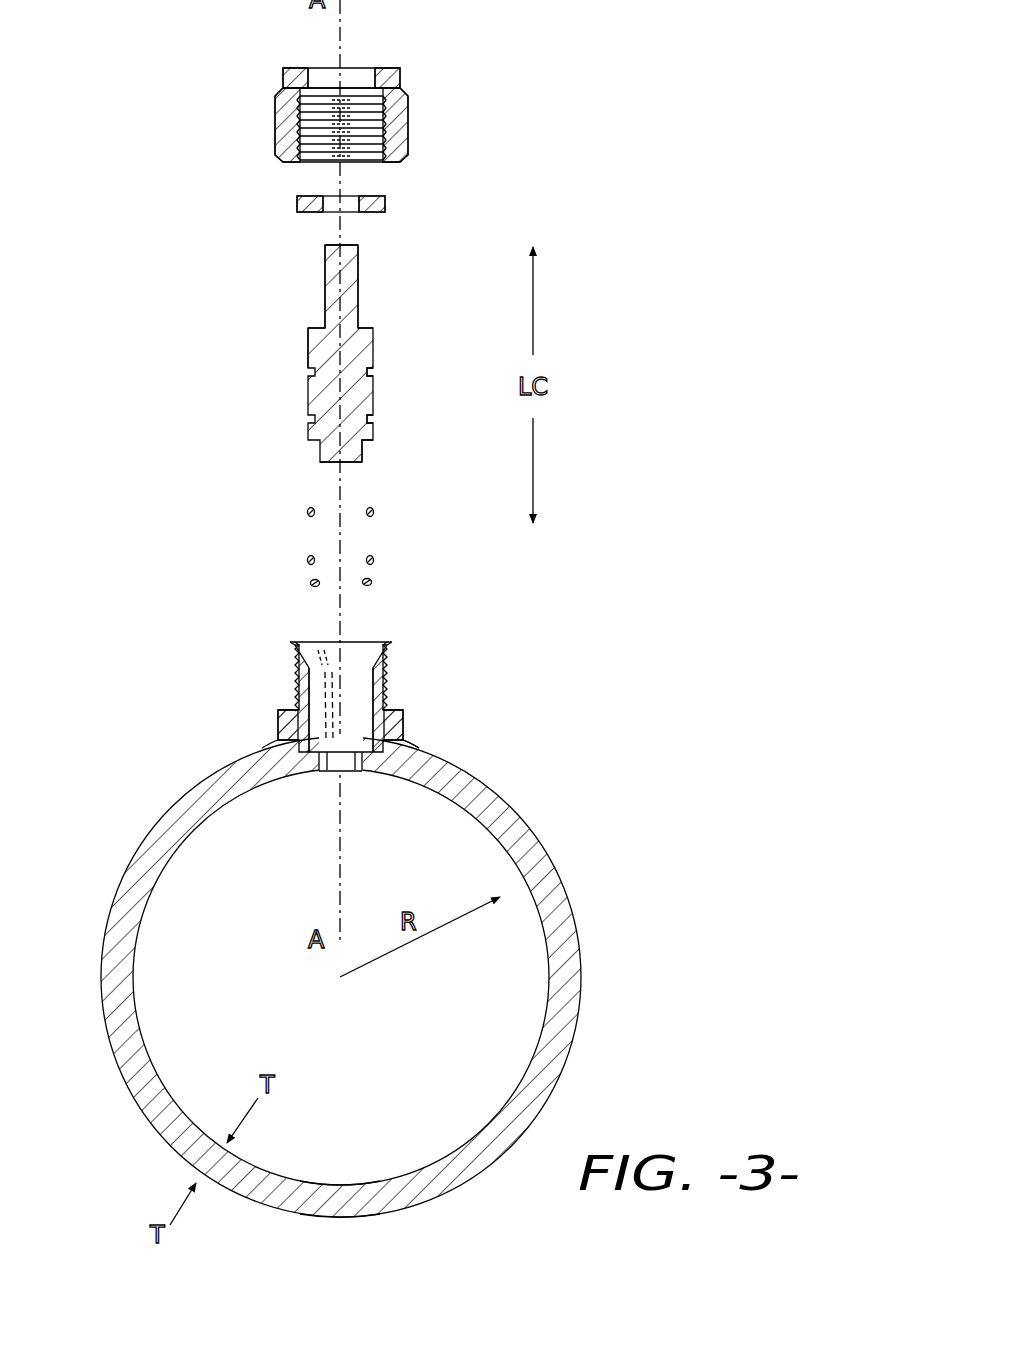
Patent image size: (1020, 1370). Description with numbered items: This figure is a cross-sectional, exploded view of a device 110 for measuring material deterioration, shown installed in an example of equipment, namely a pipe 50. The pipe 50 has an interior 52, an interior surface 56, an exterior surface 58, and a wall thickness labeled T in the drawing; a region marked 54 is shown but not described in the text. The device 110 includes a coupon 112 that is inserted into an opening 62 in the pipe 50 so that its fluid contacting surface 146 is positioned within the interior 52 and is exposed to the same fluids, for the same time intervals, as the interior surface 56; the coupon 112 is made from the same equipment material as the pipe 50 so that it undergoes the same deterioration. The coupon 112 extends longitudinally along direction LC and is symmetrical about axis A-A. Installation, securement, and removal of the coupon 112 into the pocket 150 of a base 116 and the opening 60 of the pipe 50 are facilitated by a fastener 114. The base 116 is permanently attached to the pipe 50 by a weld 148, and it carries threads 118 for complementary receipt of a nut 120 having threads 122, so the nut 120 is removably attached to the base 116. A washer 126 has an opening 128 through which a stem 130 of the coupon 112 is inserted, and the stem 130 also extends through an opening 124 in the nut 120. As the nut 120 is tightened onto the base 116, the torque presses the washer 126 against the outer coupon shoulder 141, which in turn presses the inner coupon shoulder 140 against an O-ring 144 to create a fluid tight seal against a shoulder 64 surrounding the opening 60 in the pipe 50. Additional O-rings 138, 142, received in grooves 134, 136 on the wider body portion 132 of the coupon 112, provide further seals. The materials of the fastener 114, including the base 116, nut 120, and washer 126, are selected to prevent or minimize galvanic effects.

The pipe 50 is at (575, 915).
The interior 52 is at (512, 990).
The wall of conduit 54 is at (121, 1178).
The interior surface 56 is at (341, 1182).
The exterior surface 58 is at (347, 1219).
The opening 60 is at (366, 725).
The opening 62 is at (351, 773).
The shoulder 64 is at (366, 772).
The device 110 is at (183, 312).
The coupon 112 is at (356, 374).
The fastener 114 is at (288, 110).
The base 116 is at (396, 722).
The threads 118 is at (396, 672).
The nut 120 is at (369, 111).
The threads 122 is at (376, 152).
The opening 124 is at (355, 82).
The washer 126 is at (324, 211).
The opening 128 is at (354, 215).
The stem 130 is at (333, 297).
The wider body portion 132 is at (322, 348).
The groove 134 is at (372, 371).
The groove 136 is at (372, 419).
The O-ring 138 is at (375, 512).
The inner coupon shoulder 140 is at (369, 446).
The outer coupon shoulder 141 is at (369, 322).
The O-ring 142 is at (375, 560).
The O-ring 144 is at (311, 583).
The fluid contacting surface 146 is at (325, 463).
The weld 148 is at (406, 745).
The pocket 150 is at (328, 722).